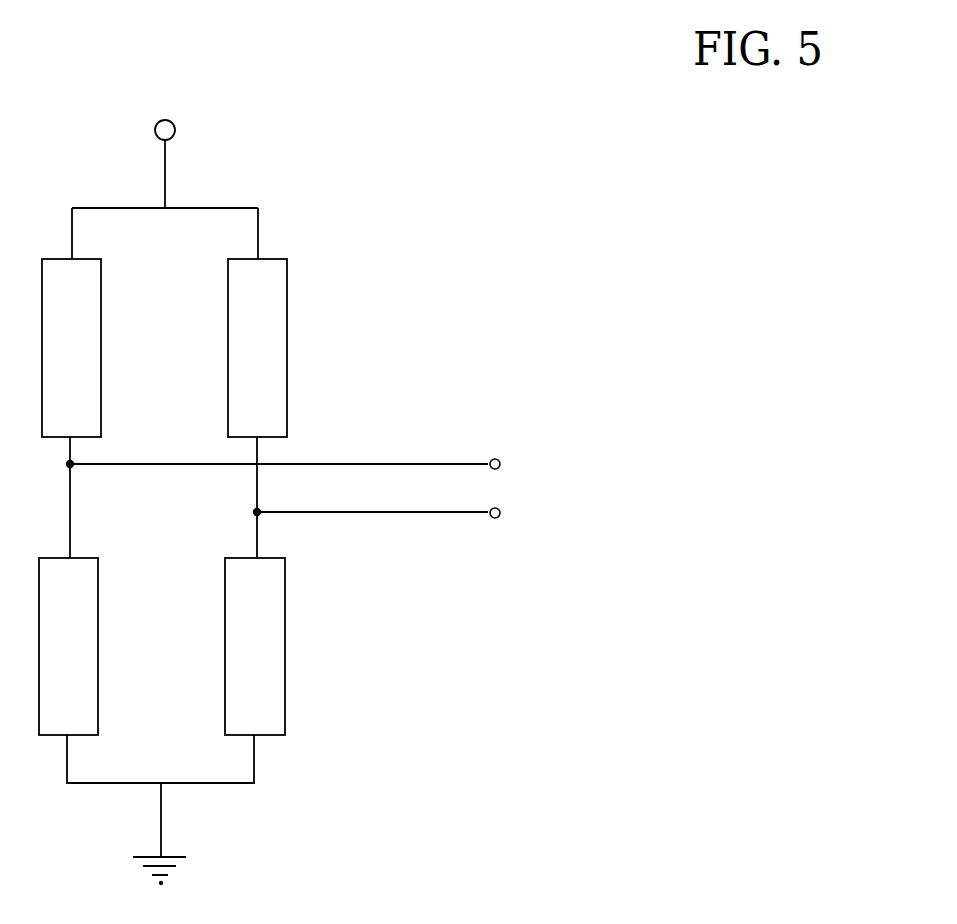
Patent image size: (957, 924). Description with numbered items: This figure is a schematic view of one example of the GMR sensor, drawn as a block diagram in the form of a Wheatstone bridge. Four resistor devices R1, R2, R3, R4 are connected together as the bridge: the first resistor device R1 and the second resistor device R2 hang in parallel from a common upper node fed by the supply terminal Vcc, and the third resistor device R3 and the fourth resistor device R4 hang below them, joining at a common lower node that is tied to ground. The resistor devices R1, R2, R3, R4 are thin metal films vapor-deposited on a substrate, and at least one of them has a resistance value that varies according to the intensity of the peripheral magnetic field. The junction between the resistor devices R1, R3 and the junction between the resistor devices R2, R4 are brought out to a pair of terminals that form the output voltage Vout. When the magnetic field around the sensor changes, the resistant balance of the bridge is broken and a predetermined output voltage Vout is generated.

The resistor device R1 is at (71, 348).
The resistor device R2 is at (257, 348).
The resistor device R3 is at (68, 646).
The resistor device R4 is at (255, 646).
The supply voltage terminal Vcc is at (169, 151).
The output voltage Vout is at (321, 488).